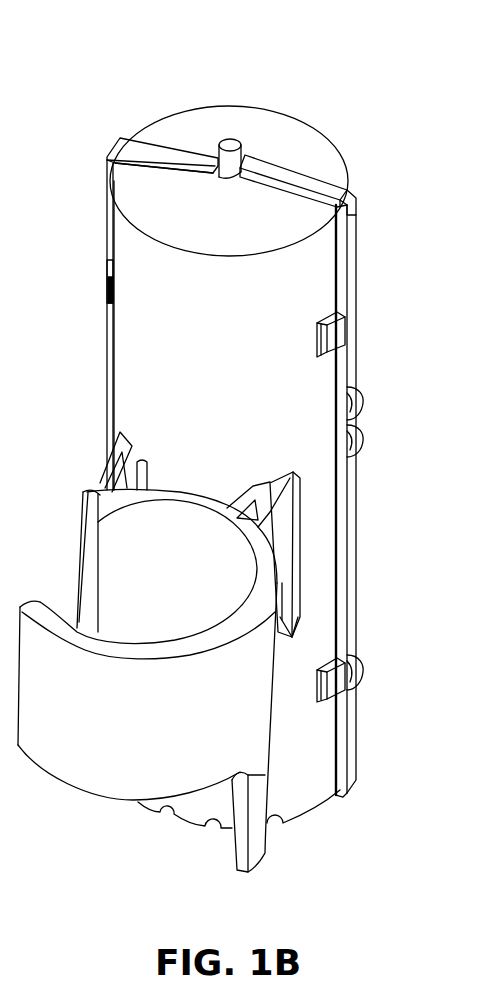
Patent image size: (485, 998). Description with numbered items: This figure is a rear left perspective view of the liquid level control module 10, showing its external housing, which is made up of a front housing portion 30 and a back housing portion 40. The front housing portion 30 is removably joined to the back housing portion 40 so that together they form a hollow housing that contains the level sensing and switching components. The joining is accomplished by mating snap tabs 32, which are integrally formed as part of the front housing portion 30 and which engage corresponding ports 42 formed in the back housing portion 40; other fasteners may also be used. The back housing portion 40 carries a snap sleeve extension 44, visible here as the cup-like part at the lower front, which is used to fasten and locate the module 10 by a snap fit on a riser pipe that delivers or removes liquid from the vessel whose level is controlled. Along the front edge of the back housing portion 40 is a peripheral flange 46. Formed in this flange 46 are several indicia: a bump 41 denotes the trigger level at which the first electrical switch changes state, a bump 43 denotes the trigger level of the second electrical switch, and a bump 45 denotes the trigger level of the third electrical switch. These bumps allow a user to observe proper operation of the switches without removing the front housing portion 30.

The liquid level control module 10 is at (242, 70).
The front housing portion 30 is at (297, 120).
The snap tabs 32 is at (107, 287).
The back housing portion 40 is at (123, 322).
The bump 41 is at (360, 672).
The ports 42 is at (318, 340).
The bump 43 is at (360, 437).
The snap sleeve extension 44 is at (63, 757).
The bump 45 is at (358, 400).
The peripheral flange 46 is at (167, 150).